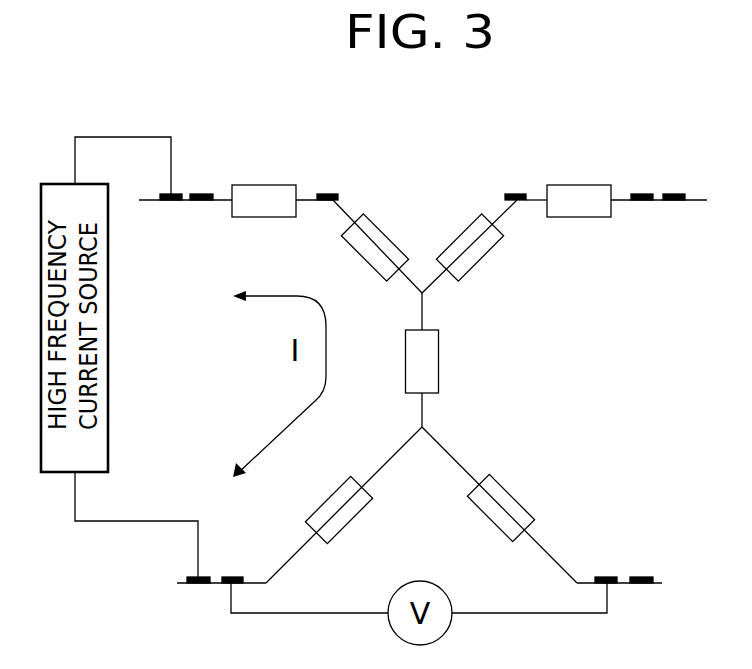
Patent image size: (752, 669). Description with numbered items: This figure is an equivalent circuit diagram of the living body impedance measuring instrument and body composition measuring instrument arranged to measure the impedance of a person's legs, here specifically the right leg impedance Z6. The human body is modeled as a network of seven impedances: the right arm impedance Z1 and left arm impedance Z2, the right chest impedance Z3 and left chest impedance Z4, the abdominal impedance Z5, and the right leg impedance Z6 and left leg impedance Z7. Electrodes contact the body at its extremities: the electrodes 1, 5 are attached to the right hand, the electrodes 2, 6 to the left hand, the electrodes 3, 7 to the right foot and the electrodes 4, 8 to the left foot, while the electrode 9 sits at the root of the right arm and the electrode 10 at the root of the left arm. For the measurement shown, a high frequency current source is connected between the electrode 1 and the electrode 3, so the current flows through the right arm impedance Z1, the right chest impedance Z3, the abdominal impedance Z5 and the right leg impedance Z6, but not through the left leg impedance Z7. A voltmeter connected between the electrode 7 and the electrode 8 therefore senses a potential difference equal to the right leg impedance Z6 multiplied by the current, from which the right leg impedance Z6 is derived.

The electrode 1 is at (171, 210).
The electrode 2 is at (682, 185).
The electrode 3 is at (198, 596).
The electrode 4 is at (640, 597).
The electrode 5 is at (201, 210).
The electrode 6 is at (641, 184).
The electrode 7 is at (231, 567).
The electrode 8 is at (605, 567).
The electrode 9 is at (331, 184).
The electrode 10 is at (515, 184).
The right arm impedance Z1 is at (263, 200).
The left arm impedance Z2 is at (577, 200).
The right chest impedance Z3 is at (367, 247).
The left chest impedance Z4 is at (470, 252).
The abdominal impedance Z5 is at (424, 354).
The right leg impedance Z6 is at (345, 513).
The left leg impedance Z7 is at (498, 498).